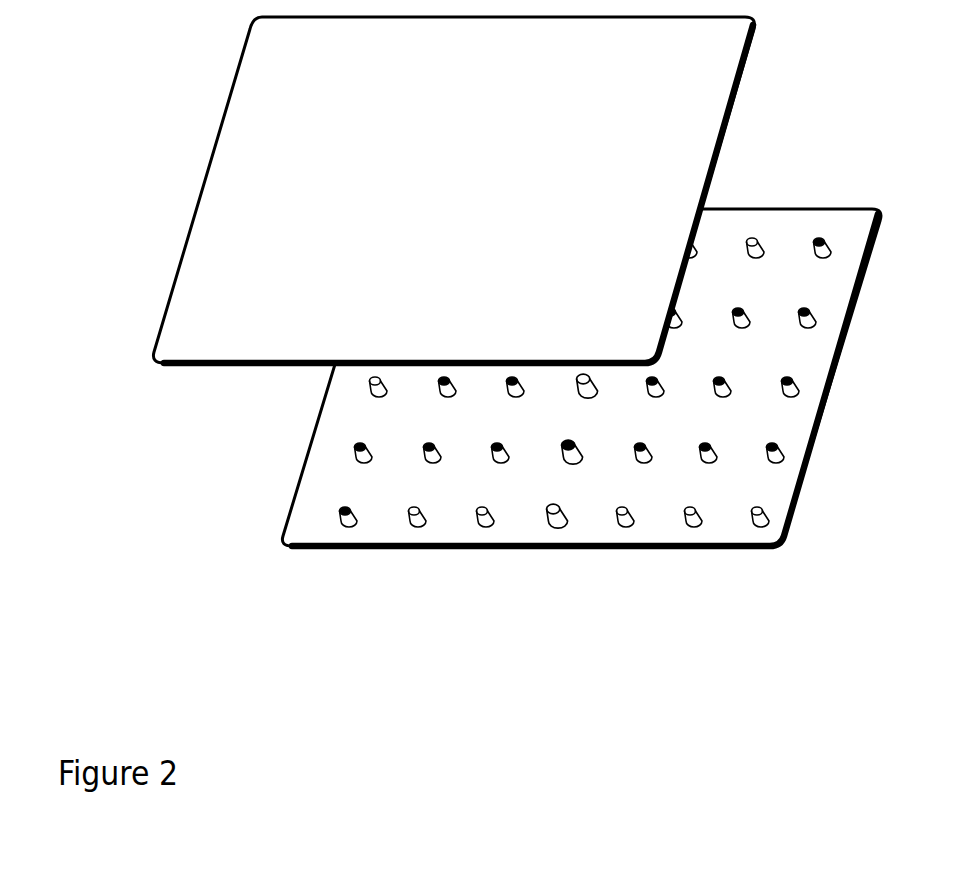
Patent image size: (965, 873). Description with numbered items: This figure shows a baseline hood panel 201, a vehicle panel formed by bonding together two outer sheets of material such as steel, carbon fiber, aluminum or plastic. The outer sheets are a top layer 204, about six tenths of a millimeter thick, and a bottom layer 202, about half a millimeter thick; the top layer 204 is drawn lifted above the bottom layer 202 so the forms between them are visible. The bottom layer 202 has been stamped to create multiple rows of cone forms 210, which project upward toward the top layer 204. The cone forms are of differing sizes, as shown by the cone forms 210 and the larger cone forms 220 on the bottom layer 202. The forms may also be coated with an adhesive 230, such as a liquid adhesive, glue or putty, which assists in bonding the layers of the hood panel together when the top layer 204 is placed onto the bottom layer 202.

The baseline hood panel 201 is at (137, 727).
The bottom layer 202 is at (802, 497).
The top layer 204 is at (732, 60).
The cone forms 210 is at (796, 398).
The cone forms 220 is at (551, 526).
The adhesive 230 is at (826, 241).